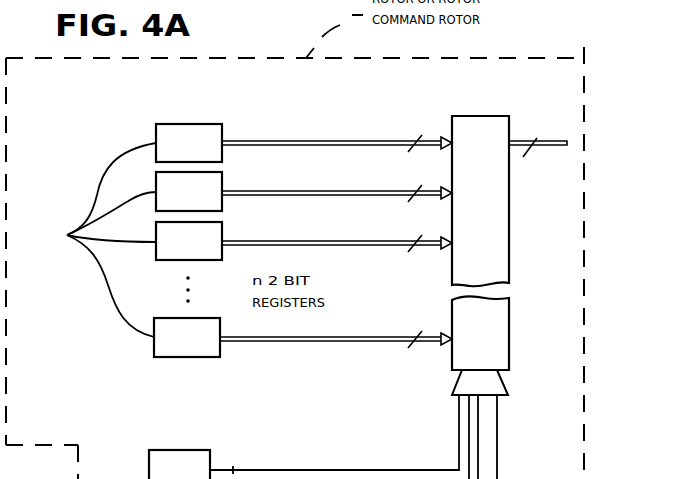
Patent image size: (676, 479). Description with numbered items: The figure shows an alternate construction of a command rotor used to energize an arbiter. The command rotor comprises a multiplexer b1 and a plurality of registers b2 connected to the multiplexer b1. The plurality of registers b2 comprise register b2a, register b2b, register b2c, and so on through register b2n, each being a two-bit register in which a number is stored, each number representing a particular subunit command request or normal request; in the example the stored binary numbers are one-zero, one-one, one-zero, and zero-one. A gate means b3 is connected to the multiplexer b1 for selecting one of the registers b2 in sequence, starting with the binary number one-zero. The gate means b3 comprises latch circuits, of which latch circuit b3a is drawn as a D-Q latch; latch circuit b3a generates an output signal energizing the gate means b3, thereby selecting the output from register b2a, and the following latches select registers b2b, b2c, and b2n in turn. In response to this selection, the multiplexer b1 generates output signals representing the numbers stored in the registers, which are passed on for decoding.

The plurality of registers b2 is at (98, 240).
The register b2a is at (222, 137).
The register b2b is at (222, 186).
The register b2c is at (222, 235).
The register b2n is at (220, 349).
The multiplexer b1 is at (509, 205).
The gate means b3 is at (449, 387).
The latch circuit b3a is at (210, 459).